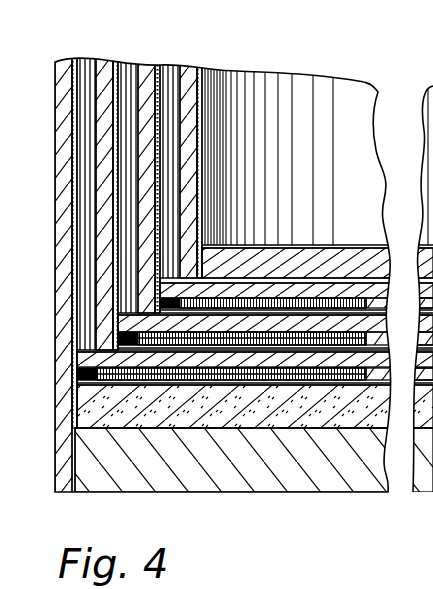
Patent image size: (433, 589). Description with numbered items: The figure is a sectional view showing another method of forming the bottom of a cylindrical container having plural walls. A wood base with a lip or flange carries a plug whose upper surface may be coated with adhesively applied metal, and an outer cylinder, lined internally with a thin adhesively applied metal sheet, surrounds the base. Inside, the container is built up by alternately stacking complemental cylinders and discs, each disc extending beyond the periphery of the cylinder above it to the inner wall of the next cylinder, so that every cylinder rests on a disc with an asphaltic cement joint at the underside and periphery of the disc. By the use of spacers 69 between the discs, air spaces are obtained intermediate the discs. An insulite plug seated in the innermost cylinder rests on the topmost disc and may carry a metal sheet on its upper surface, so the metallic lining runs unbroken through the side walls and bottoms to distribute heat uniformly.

The spacers 69 is at (400, 302).